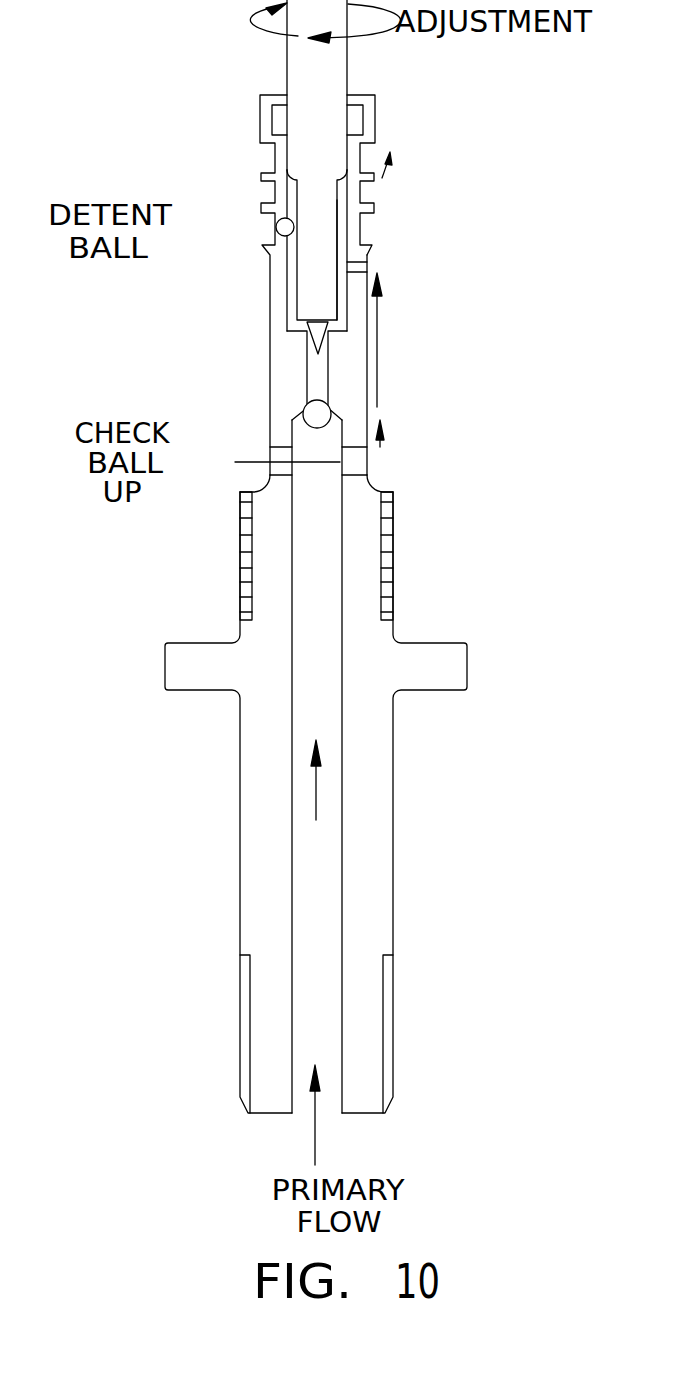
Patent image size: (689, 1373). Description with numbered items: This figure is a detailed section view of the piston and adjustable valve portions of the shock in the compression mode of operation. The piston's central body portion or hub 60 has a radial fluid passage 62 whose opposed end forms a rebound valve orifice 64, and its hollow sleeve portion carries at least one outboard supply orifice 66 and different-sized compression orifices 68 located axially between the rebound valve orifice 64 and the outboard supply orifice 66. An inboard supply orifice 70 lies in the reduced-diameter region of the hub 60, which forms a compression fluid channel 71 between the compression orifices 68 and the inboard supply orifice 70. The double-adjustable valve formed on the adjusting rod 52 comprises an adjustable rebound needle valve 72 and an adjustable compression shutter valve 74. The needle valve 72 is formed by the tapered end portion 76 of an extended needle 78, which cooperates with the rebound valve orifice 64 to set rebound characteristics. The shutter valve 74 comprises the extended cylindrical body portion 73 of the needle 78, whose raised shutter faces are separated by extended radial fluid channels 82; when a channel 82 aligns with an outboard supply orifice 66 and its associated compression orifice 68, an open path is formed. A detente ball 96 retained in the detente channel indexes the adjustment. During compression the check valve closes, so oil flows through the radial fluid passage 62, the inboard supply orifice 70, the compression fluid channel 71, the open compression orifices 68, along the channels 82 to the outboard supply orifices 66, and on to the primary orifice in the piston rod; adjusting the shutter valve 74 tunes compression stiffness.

The adjusting rod 52 is at (300, 78).
The central body portion or hub 60 is at (393, 767).
The radial fluid passage 62 is at (325, 603).
The rebound valve orifice 64 is at (326, 353).
The outboard supply orifice 66 is at (345, 192).
The compression orifice 68 is at (370, 264).
The inboard supply orifice 70 is at (270, 450).
The compression fluid channel 71 is at (242, 463).
The adjustable rebound needle valve 72 is at (245, 326).
The extended cylindrical body portion 73 is at (310, 225).
The adjustable compression shutter valve 74 is at (393, 243).
The tapered end portion 76 is at (322, 326).
The extended needle 78 is at (307, 285).
The extended radial fluid channel 82 is at (342, 287).
The detente ball 96 is at (274, 227).